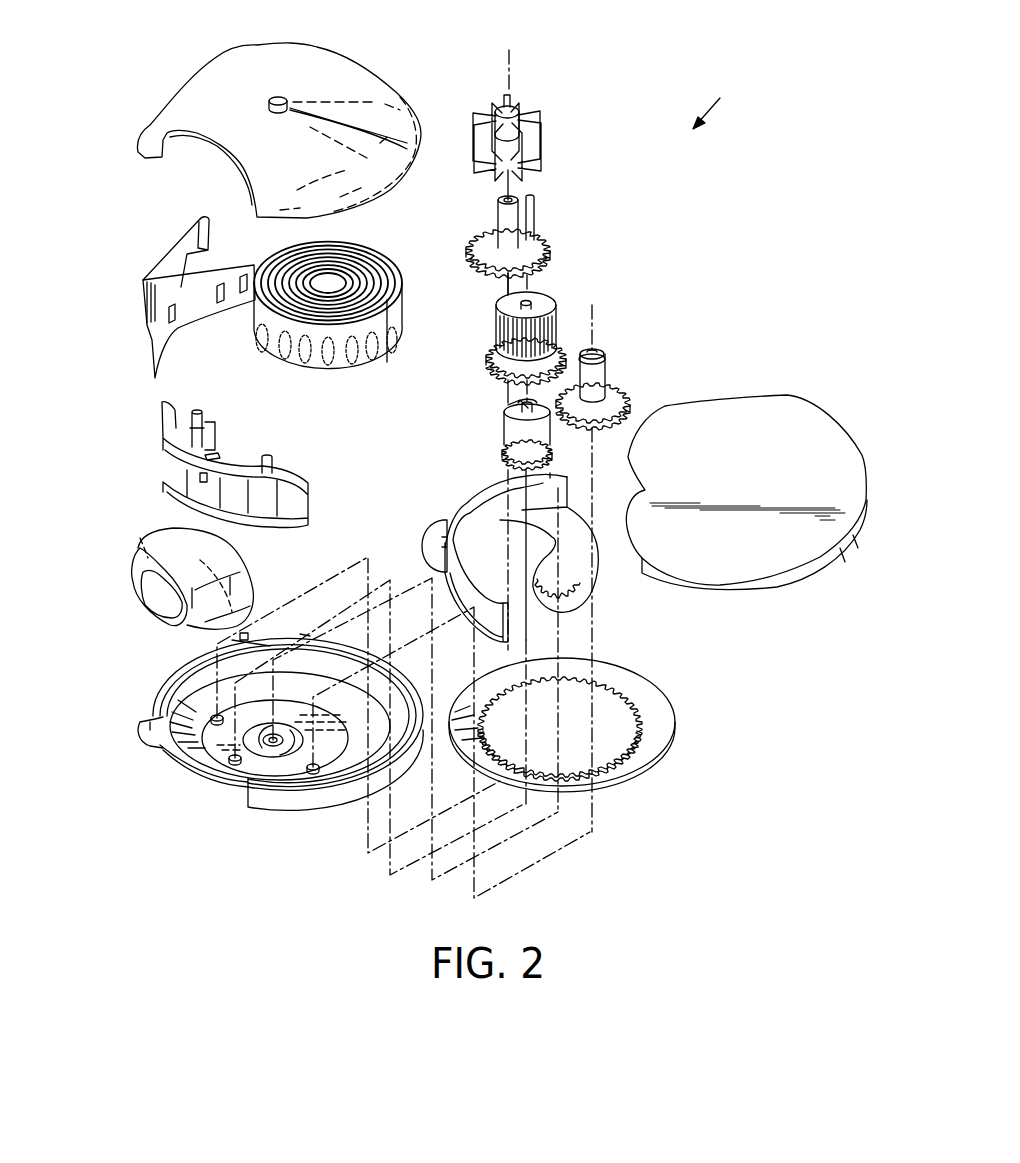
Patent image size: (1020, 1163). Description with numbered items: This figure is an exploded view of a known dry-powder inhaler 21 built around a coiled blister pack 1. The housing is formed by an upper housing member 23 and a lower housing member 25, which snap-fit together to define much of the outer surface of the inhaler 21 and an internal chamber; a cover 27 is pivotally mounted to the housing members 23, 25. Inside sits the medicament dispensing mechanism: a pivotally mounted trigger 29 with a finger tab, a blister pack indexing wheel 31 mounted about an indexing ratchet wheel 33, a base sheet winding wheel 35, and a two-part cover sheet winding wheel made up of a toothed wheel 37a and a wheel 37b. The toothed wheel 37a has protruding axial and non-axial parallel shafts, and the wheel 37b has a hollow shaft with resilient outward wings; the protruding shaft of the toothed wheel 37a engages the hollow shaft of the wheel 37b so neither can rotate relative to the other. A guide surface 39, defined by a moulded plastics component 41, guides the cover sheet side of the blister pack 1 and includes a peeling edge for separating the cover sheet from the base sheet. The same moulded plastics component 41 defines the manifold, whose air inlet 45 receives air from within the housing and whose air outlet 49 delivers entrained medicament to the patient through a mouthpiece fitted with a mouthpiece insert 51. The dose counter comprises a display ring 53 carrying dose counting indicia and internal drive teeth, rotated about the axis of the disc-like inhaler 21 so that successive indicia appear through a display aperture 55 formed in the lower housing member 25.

The blister pack 1 is at (345, 363).
The dry-powder inhaler 21 is at (722, 106).
The upper housing member 23 is at (222, 62).
The lower housing member 25 is at (270, 800).
The cover 27 is at (822, 548).
The trigger 29 is at (462, 502).
The blister pack indexing wheel 31 is at (548, 305).
The indexing ratchet wheel 33 is at (500, 444).
The base sheet winding wheel 35 is at (617, 382).
The toothed wheel 37a is at (545, 240).
The wheel 37b is at (528, 100).
The guide surface 39 is at (185, 423).
The moulded plastics component 41 is at (285, 470).
The air inlet 45 is at (215, 457).
The air outlet 49 is at (200, 476).
The mouthpiece insert 51 is at (160, 558).
The display ring 53 is at (668, 725).
The display aperture 55 is at (195, 747).